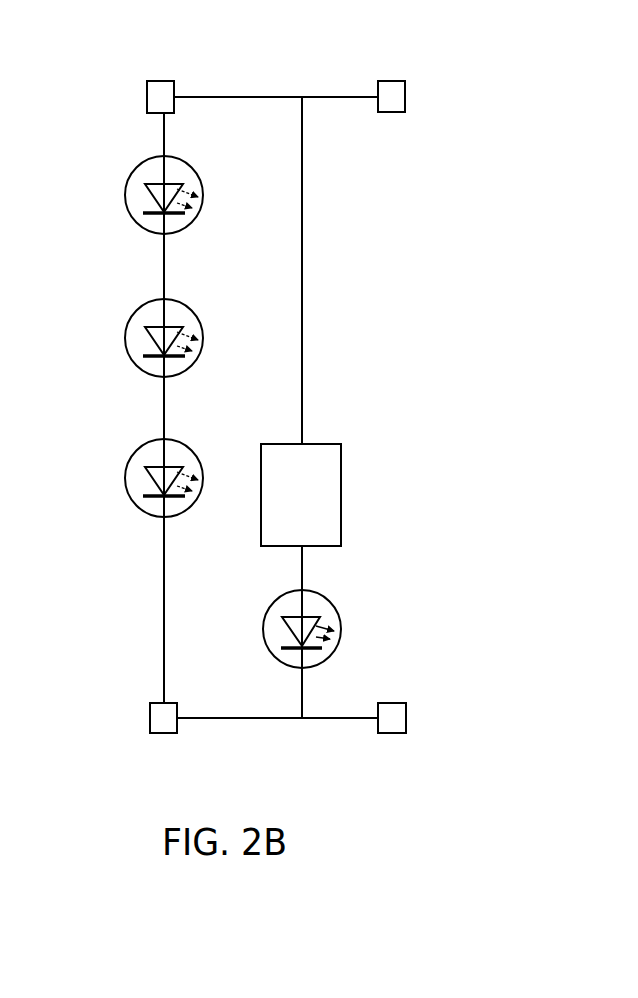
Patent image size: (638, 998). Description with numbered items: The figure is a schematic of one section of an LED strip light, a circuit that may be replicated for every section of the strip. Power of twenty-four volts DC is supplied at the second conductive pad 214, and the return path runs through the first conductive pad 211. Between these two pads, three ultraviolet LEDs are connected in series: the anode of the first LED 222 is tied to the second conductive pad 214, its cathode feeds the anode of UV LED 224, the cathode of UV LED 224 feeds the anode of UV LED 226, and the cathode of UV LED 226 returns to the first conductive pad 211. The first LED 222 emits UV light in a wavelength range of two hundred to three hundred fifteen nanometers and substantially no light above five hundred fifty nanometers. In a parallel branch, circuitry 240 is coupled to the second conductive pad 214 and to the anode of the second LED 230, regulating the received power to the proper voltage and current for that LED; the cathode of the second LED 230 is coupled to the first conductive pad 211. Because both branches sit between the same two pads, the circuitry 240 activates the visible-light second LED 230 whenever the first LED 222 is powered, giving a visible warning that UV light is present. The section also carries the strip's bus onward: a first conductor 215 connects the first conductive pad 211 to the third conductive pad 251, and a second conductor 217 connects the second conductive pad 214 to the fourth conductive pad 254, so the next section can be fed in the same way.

The first conductive pad 211 is at (162, 713).
The second conductive pad 214 is at (158, 98).
The first conductor 215 is at (332, 720).
The second conductor 217 is at (332, 95).
The first light emitting diode 222 is at (138, 227).
The UV LED 224 is at (132, 363).
The UV LED 226 is at (132, 503).
The second LED 230 is at (325, 595).
The circuitry 240 is at (343, 453).
The third conductive pad 251 is at (393, 718).
The fourth conductive pad 254 is at (393, 102).